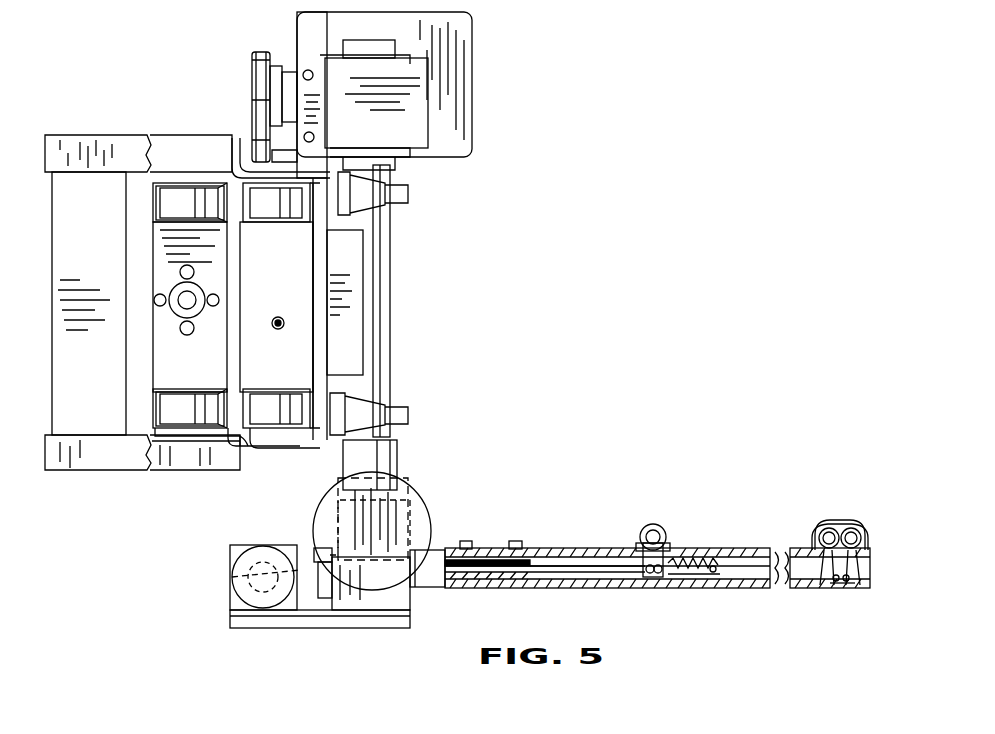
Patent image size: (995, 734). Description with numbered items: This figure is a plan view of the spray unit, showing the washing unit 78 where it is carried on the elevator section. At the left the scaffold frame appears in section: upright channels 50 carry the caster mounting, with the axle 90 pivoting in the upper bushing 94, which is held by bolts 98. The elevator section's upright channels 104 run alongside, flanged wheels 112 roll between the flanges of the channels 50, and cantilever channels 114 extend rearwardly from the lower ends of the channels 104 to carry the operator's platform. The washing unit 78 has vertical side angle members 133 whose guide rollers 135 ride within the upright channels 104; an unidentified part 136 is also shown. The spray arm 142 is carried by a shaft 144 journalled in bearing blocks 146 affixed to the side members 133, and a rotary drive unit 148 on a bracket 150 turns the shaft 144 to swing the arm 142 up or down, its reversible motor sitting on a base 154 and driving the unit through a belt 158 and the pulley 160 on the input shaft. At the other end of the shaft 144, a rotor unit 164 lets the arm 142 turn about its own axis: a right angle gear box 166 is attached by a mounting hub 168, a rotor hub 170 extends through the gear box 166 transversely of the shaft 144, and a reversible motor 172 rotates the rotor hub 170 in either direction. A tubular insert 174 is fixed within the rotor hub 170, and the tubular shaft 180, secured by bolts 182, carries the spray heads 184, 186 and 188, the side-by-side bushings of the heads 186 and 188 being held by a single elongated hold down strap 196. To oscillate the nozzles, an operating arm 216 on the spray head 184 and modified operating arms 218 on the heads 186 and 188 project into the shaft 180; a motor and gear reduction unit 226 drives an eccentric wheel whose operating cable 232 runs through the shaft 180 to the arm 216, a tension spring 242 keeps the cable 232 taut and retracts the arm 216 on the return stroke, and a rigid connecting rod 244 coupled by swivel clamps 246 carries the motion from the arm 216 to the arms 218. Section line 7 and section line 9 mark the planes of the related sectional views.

The upright channels 50 is at (153, 213).
The washing unit 78 is at (410, 310).
The axle 90 is at (178, 310).
The upper bushing 94 is at (165, 253).
The bolts 98 is at (216, 306).
The upright channels 104 is at (295, 210).
The flanged wheels 112 is at (175, 192).
The cantilever beams or channels 114 is at (152, 148).
The vertical side angle members 133 is at (236, 150).
The guide rollers 135 is at (306, 222).
The pin 136 is at (285, 323).
The wand or arm 142 is at (742, 545).
The shaft 144 is at (388, 272).
The bearing blocks 146 is at (410, 196).
The rotary drive unit 148 is at (425, 122).
The bracket 150 is at (308, 68).
The base 154 is at (460, 58).
The belt 158 is at (258, 62).
The pulley 160 is at (254, 105).
The rotor unit 164 is at (430, 488).
The right angle gear box 166 is at (405, 605).
The mounting hub 168 is at (392, 448).
The rotor hub 170 is at (326, 590).
The reversible motor 172 is at (330, 518).
The tubular insert 174 is at (460, 541).
The tubular shaft 180 is at (548, 588).
The bolts 182 is at (515, 541).
The spray head 184 is at (640, 527).
The spray head 186 is at (815, 525).
The spray head 188 is at (858, 522).
The single elongated hold down strap 196 is at (836, 524).
The operating arm 216 is at (648, 545).
The operating arms 218 is at (822, 585).
The motor and gear reduction unit 226 is at (230, 600).
The operating cable 232 is at (548, 552).
The tension spring 242 is at (683, 580).
The rigid connecting rod 244 is at (700, 558).
The swivel clamps 246 is at (838, 585).
The section line 7 is at (690, 481).
The section line 9 is at (135, 275).